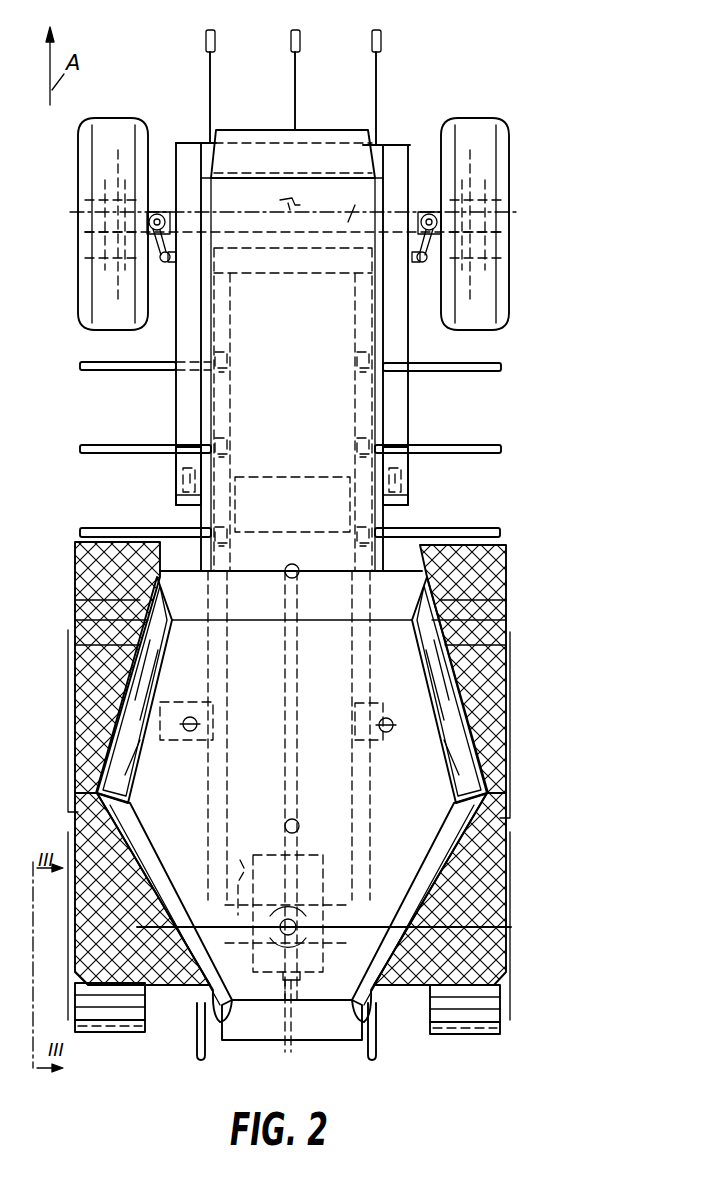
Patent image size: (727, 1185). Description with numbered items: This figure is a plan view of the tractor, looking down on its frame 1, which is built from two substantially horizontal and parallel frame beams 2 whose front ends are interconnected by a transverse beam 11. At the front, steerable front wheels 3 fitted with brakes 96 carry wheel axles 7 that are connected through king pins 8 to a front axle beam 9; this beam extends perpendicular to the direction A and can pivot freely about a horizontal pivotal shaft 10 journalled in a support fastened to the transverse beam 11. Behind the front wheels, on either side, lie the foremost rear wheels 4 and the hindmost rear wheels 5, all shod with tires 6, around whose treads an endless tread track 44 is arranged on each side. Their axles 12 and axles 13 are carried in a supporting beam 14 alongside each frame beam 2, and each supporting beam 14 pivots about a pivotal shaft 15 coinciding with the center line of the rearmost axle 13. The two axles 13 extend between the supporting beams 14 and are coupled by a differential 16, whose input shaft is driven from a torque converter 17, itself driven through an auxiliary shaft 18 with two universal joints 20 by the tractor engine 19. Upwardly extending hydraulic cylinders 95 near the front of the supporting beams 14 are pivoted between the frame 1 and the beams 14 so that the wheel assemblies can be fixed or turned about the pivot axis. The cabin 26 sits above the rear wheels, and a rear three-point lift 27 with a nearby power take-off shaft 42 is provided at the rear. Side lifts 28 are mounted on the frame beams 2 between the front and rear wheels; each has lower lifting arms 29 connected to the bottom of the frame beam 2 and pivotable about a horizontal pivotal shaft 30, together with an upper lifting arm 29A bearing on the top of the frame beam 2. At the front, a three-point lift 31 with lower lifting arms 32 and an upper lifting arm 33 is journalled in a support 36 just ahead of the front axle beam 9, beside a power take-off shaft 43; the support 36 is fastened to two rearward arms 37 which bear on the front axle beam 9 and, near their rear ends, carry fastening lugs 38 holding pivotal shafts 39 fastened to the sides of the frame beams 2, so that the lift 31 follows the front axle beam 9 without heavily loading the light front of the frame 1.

The frame 1 is at (225, 676).
The frame beams 2 is at (228, 603).
The front wheels 3 is at (80, 282).
The foremost rear wheels 4 is at (58, 652).
The hindmost rear wheels 5 is at (60, 930).
The tires 6 is at (66, 806).
The wheel axles 7 is at (78, 232).
The king pins 8 is at (162, 212).
The front axle beam 9 is at (347, 201).
The pivotal shaft 10 is at (280, 197).
The transverse beam 11 is at (312, 278).
The axles 12 is at (412, 740).
The axles 13 is at (486, 920).
The supporting beam 14 is at (180, 704).
The pivotal shaft 15 is at (243, 885).
The differential 16 is at (286, 896).
The torque converter 17 is at (318, 858).
The auxiliary shaft 18 is at (284, 714).
The tractor engine 19 is at (408, 348).
The universal joints 20 is at (284, 566).
The cabin 26 is at (326, 596).
The three-point lift 27 is at (250, 1064).
The lifts 28 is at (112, 482).
The lifting arms 29 is at (78, 366).
The upper lifting arm 29A is at (78, 446).
The pivotal shaft 30 is at (232, 342).
The front three-point lift 31 is at (350, 42).
The lower lifting arms 32 is at (205, 42).
The upper lifting arm 33 is at (292, 68).
The support 36 is at (392, 148).
The arms 37 is at (185, 335).
The fastening lugs 38 is at (175, 496).
The pivotal shafts 39 is at (178, 484).
The power take-off shaft 42 is at (298, 978).
The power take-off shaft 43 is at (300, 128).
The endless tread track 44 is at (108, 1036).
The hydraulic cylinders 95 is at (186, 732).
The brakes 96 is at (130, 180).